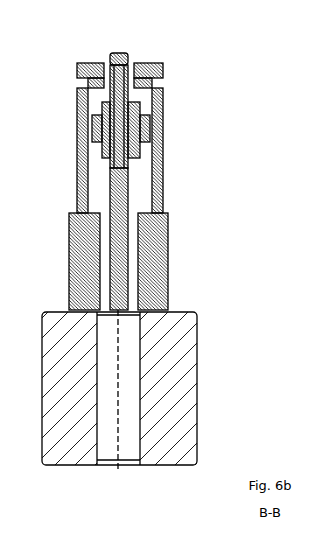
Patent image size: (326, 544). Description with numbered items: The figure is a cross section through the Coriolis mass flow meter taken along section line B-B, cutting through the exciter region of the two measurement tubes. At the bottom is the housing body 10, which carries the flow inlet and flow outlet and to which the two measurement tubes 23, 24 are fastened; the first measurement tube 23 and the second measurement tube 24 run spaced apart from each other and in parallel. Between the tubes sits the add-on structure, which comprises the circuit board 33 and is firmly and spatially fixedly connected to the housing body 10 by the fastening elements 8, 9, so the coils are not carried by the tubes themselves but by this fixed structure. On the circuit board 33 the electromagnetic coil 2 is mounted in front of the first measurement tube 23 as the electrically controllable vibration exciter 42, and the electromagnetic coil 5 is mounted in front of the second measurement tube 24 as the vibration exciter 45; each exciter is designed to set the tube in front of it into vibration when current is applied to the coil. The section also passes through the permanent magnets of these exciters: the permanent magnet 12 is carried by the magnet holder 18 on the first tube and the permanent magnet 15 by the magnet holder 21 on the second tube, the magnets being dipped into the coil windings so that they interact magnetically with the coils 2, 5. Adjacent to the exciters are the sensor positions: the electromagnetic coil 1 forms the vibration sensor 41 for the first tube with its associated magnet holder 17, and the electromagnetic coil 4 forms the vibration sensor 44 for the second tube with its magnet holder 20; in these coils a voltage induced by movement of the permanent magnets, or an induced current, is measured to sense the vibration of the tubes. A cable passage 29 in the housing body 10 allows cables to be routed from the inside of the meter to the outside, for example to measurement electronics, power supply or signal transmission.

The electromagnetic coil 1 is at (94, 137).
The electromagnetic coil 2 is at (101, 62).
The electromagnetic coil 4 is at (146, 130).
The electromagnetic coil 5 is at (137, 62).
The fastening element 8 is at (82, 262).
The fastening element 9 is at (155, 265).
The housing body 10 is at (180, 382).
The permanent magnet 12 is at (82, 78).
The permanent magnet 15 is at (160, 78).
The magnet holder 17 is at (88, 128).
The magnet holder 18 is at (86, 62).
The magnet holder 20 is at (163, 125).
The magnet holder 21 is at (152, 64).
The first measurement tube 23 is at (78, 200).
The second measurement tube 24 is at (157, 200).
The cable passage 29 is at (125, 362).
The circuit board 33 is at (113, 168).
The vibration sensor 41 is at (66, 133).
The vibration exciter 42 is at (78, 60).
The vibration sensor 44 is at (172, 127).
The vibration exciter 45 is at (172, 53).